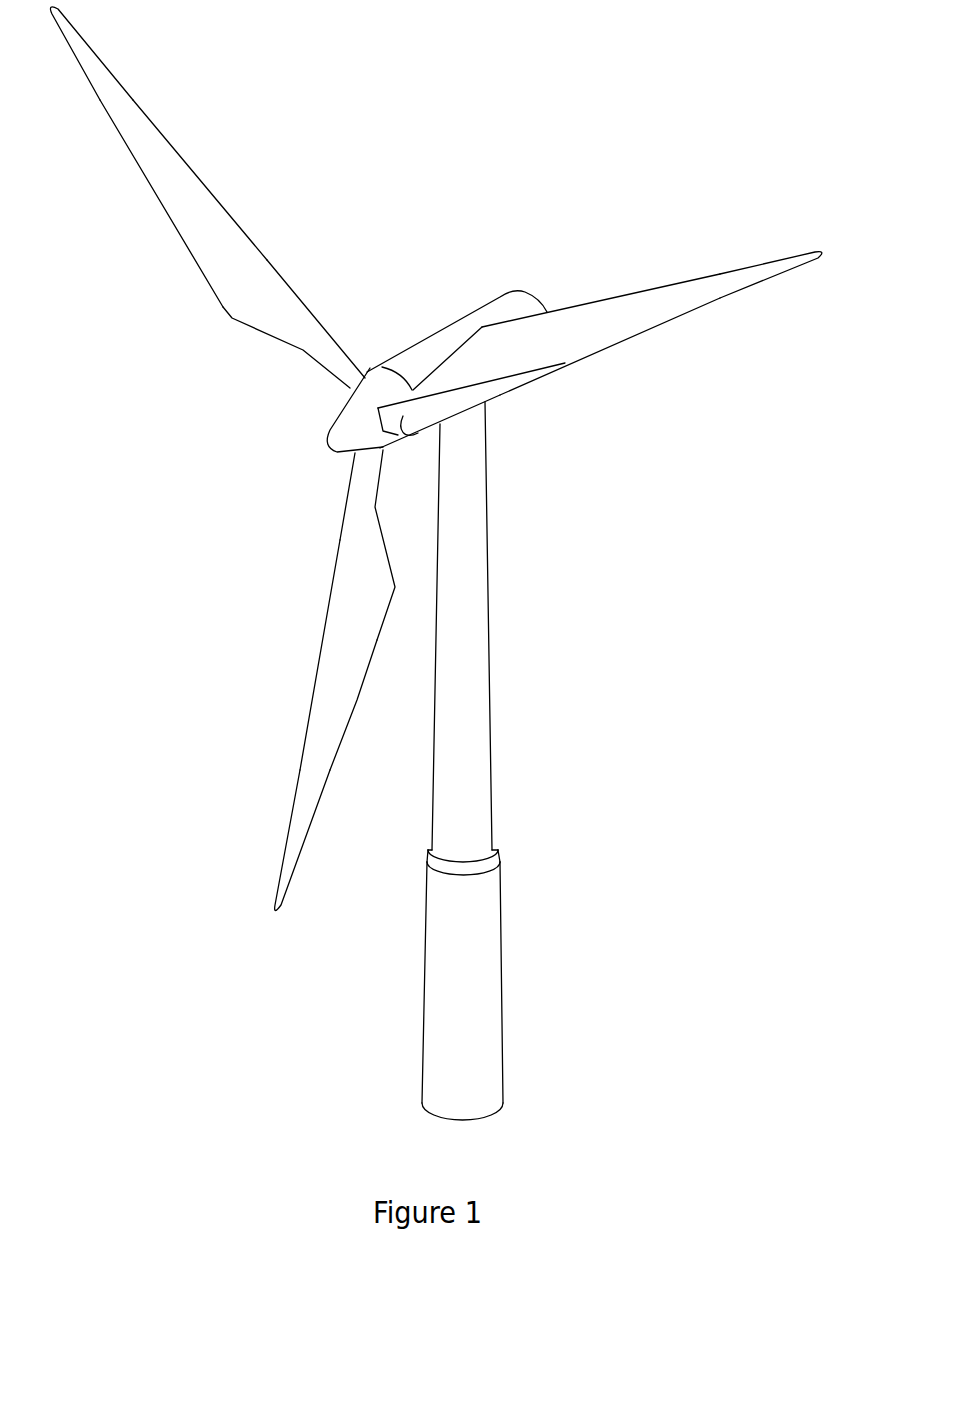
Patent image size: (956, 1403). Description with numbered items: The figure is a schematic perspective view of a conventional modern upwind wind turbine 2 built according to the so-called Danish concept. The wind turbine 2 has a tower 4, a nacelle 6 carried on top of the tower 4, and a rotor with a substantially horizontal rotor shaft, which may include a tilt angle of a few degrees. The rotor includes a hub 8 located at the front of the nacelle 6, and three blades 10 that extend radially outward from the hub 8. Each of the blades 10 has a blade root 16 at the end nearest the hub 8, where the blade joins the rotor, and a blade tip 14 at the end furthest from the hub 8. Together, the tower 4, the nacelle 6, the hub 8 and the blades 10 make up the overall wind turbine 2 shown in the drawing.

The wind turbine 2 is at (578, 700).
The tower 4 is at (480, 628).
The nacelle 6 is at (430, 348).
The hub 8 is at (343, 427).
The blades 10 is at (240, 288).
The blade tip 14 is at (92, 60).
The blade root 16 is at (343, 396).